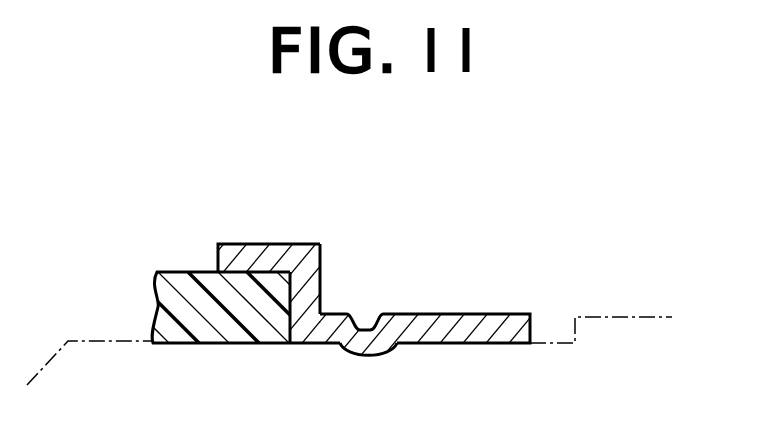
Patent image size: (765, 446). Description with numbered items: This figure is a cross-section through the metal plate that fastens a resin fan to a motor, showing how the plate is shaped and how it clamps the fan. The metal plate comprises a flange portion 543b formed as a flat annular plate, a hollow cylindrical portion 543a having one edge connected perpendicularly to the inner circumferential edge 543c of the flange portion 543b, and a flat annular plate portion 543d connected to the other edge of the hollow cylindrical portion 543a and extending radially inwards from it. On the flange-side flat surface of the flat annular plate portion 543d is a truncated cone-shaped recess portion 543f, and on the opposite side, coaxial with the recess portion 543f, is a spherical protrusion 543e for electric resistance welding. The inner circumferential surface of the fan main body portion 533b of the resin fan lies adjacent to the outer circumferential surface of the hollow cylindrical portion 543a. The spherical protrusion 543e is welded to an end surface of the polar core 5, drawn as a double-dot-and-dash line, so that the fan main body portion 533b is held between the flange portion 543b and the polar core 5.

The polar core 5 is at (633, 327).
The fan main body portion 533b is at (180, 278).
The hollow cylindrical portion 543a is at (322, 273).
The flange portion 543b is at (245, 250).
The inner circumferential edge 543c is at (322, 256).
The flat annular plate portion 543d is at (488, 328).
The spherical protrusion 543e is at (385, 353).
The truncated cone-shaped recess portion 543f is at (372, 318).